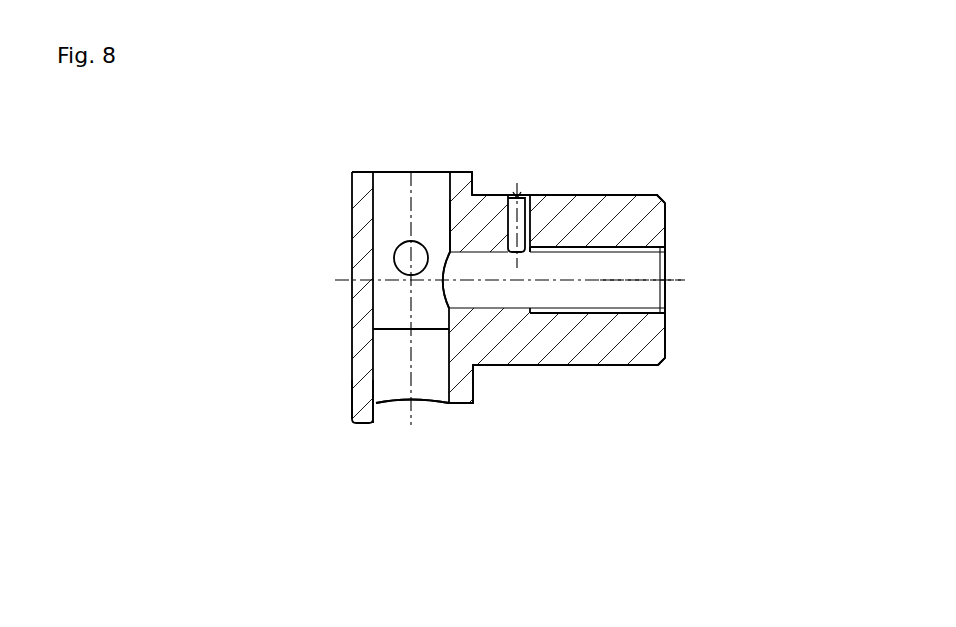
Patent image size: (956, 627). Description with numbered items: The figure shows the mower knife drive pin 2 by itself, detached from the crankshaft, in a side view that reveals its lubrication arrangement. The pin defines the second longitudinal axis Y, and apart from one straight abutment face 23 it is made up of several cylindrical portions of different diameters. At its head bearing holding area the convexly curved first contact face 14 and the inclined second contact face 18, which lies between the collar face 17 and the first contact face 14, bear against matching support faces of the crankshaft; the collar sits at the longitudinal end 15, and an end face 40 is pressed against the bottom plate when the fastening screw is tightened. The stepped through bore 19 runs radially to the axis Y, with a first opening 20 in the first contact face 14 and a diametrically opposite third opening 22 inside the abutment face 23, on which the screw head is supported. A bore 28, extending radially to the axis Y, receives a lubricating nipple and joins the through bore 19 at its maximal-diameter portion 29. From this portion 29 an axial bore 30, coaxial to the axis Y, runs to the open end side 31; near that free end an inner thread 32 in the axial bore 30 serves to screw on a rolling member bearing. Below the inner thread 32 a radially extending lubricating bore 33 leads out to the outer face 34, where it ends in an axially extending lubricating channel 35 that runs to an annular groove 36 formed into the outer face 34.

The mower knife drive pin 2 is at (279, 203).
The first contact face 14 is at (455, 405).
The longitudinal end 15 is at (352, 412).
The collar face 17 is at (360, 423).
The second contact face 18 is at (373, 413).
The through bore 19 is at (392, 347).
The first opening 20 is at (422, 400).
The third opening 22 is at (390, 172).
The abutment face 23 is at (455, 172).
The bore 28 is at (412, 247).
The portion of the through bore 29 is at (430, 215).
The axial bore 30 is at (647, 292).
The end side 31 is at (667, 338).
The inner thread 32 is at (676, 272).
The lubricating bore 33 is at (518, 196).
The outer face 34 is at (546, 365).
The lubricating channel 35 is at (575, 197).
The annular groove 36 is at (610, 197).
The end face 40 is at (353, 225).
The second longitudinal axis Y is at (677, 271).